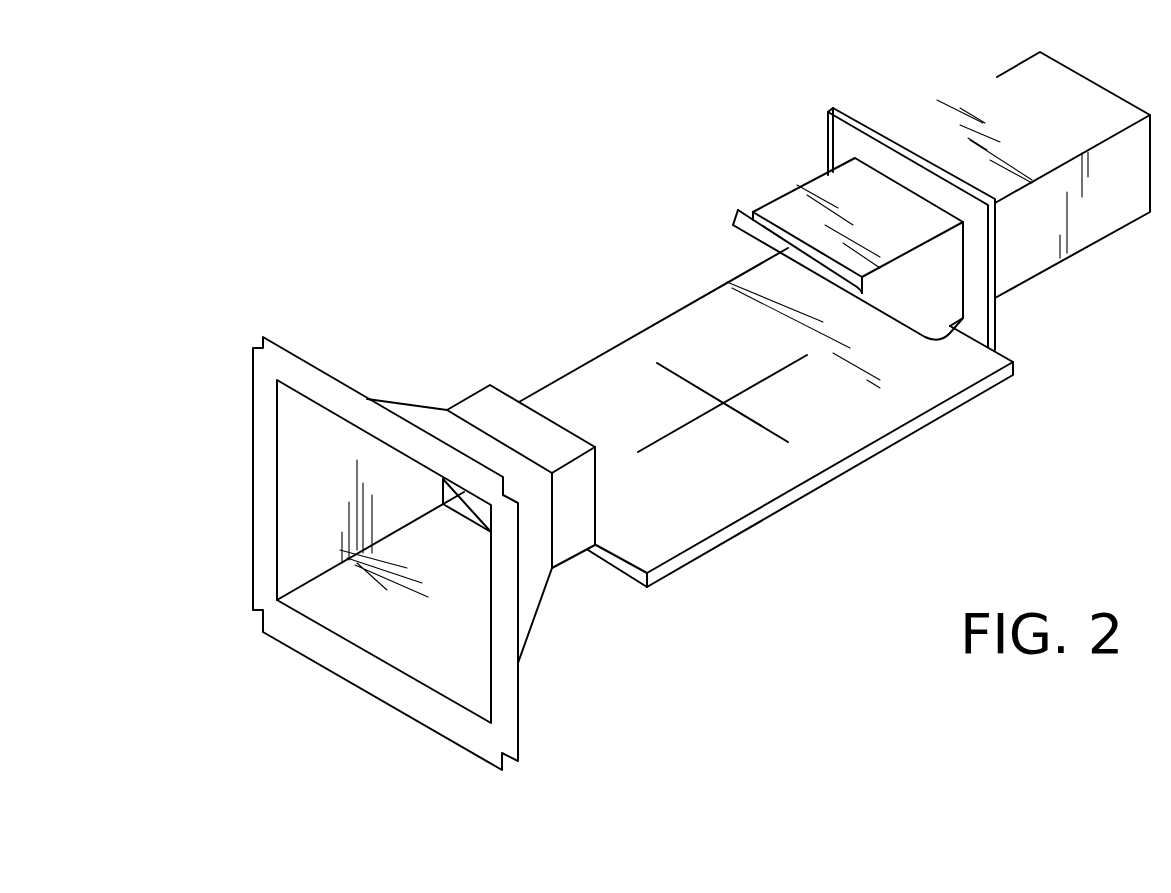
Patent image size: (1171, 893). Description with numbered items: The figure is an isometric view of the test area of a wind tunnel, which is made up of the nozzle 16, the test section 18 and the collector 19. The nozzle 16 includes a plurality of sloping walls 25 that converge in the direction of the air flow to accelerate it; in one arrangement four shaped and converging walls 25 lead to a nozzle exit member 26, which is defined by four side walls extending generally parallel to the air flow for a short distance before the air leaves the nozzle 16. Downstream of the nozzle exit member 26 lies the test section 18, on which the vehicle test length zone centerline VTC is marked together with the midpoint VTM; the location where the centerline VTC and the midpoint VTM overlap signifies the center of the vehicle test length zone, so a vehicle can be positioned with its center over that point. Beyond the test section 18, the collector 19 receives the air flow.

The nozzle 16 is at (308, 360).
The test section 18 is at (718, 362).
The collector 19 is at (813, 172).
The sloping walls 25 is at (293, 487).
The nozzle exit member 26 is at (502, 412).
The vehicle test length zone centerline VTC is at (775, 378).
The midpoint VTM is at (745, 423).